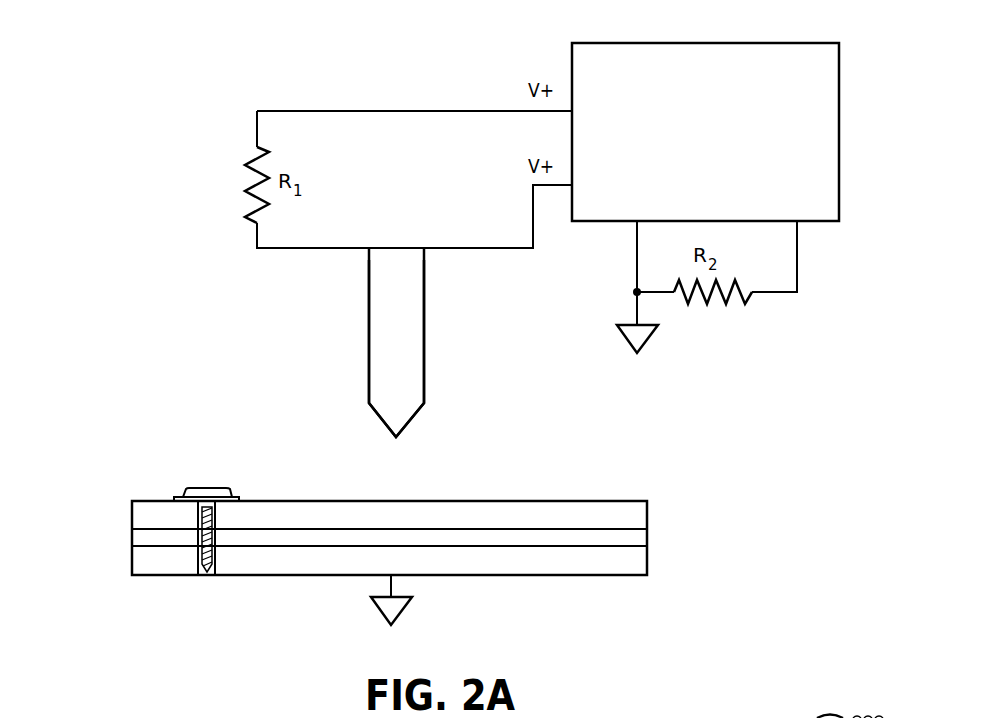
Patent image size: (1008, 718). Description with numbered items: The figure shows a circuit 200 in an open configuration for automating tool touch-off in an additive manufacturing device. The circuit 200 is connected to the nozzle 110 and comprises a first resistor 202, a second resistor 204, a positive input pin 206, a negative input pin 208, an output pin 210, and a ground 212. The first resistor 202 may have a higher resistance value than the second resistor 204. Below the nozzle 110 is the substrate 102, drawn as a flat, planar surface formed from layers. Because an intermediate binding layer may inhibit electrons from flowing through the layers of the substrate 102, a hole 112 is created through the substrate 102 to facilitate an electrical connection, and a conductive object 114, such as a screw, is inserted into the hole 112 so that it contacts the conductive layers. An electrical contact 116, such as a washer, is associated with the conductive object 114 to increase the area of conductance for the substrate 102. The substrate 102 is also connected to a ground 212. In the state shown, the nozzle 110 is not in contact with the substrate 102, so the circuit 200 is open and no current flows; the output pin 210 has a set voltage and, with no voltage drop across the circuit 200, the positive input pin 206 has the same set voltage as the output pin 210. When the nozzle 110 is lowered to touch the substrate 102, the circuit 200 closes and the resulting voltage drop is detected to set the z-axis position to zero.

The circuit 200 is at (797, 34).
The first resistor 202 is at (243, 181).
The second resistor 204 is at (727, 300).
The positive input pin 206 is at (786, 190).
The negative input pin 208 is at (648, 172).
The output pin 210 is at (648, 96).
The ground 212 is at (652, 337).
The nozzle 110 is at (424, 328).
The substrate 102 is at (96, 547).
The hole 112 is at (198, 511).
The conductive object 114 is at (208, 488).
The electrical contact 116 is at (242, 497).